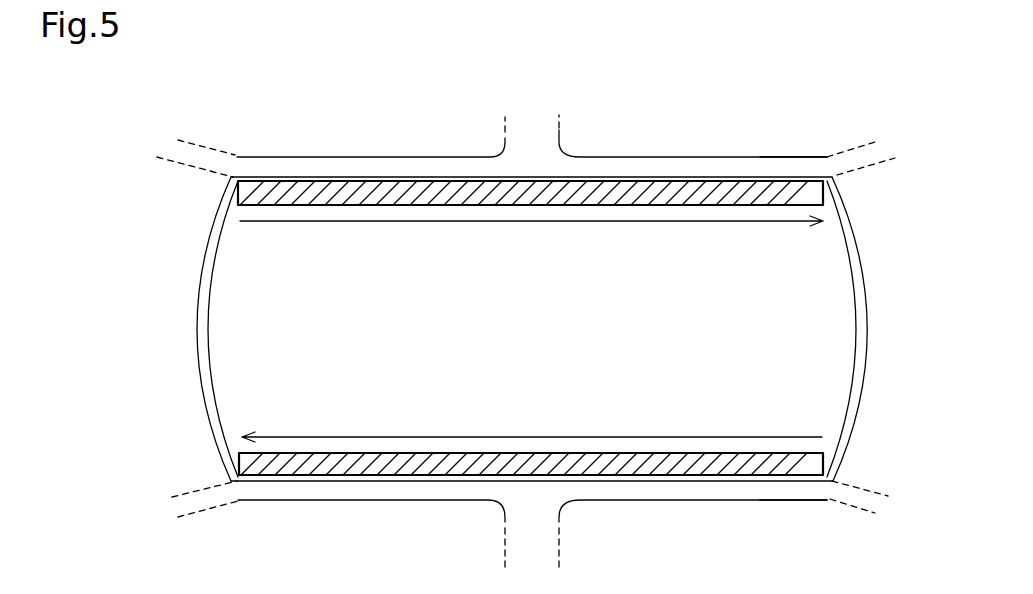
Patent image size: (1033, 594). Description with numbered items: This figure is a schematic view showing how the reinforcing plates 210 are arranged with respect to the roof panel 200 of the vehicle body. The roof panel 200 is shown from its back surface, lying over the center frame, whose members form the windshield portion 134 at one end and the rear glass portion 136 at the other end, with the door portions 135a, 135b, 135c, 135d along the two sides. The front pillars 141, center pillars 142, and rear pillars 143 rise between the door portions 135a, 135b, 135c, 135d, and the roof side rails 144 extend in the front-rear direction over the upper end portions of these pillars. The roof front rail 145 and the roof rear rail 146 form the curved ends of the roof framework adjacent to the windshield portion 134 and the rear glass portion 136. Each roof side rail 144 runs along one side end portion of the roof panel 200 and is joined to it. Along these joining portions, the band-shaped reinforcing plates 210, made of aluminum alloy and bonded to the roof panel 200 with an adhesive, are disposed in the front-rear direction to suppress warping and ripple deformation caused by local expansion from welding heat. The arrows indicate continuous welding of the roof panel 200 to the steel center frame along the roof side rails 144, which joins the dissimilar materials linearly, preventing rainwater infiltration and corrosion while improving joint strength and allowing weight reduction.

The windshield portion 134 is at (173, 329).
The rear glass portion 136 is at (881, 329).
The door portion 135a is at (348, 135).
The door portion 135b is at (335, 555).
The door portion 135c is at (663, 135).
The door portion 135d is at (660, 557).
The front pillar 141 is at (203, 148).
The center pillar 142 is at (553, 130).
The rear pillar 143 is at (845, 150).
The roof side rail 144 is at (777, 157).
The roof front rail 145 is at (210, 268).
The roof rear rail 146 is at (847, 230).
The roof panel 200 is at (463, 375).
The reinforcing plate 210 is at (247, 203).